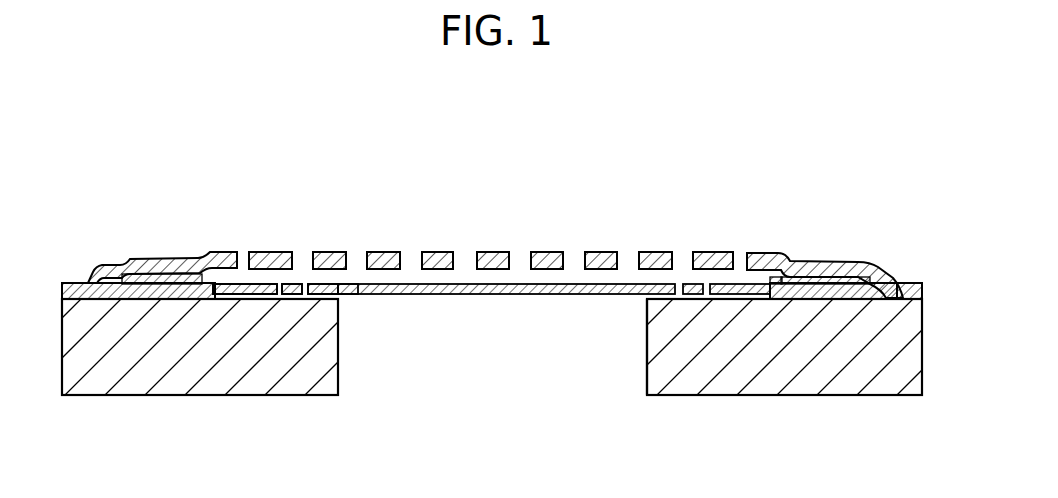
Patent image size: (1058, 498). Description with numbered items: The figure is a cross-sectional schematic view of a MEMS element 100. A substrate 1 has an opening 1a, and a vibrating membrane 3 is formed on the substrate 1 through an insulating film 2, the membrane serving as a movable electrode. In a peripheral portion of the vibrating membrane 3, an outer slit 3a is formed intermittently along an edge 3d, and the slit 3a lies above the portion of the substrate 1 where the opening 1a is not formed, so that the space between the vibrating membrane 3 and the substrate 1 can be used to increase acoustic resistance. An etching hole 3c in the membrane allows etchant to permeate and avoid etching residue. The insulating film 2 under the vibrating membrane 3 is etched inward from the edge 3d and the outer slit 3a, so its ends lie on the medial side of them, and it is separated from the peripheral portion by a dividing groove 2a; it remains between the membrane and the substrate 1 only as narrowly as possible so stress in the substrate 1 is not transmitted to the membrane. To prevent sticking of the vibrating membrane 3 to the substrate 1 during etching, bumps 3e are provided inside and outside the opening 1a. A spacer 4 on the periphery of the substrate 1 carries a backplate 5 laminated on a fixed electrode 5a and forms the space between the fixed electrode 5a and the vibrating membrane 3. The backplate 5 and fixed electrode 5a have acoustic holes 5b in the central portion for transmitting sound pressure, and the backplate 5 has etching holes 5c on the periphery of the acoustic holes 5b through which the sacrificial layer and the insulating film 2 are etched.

The MEMS element 100 is at (808, 147).
The substrate 1 is at (722, 383).
The opening 1a is at (646, 345).
The insulating film 2 is at (748, 300).
The dividing groove 2a is at (775, 290).
The vibrating membrane 3 is at (480, 294).
The outer slit 3a is at (278, 298).
The etching hole 3c is at (305, 298).
The edge 3d is at (197, 300).
The bumps 3e is at (352, 296).
The spacer 4 is at (903, 270).
The backplate 5 is at (868, 262).
The fixed electrode 5a is at (663, 258).
The acoustic holes 5b is at (300, 255).
The etching holes 5c is at (245, 255).